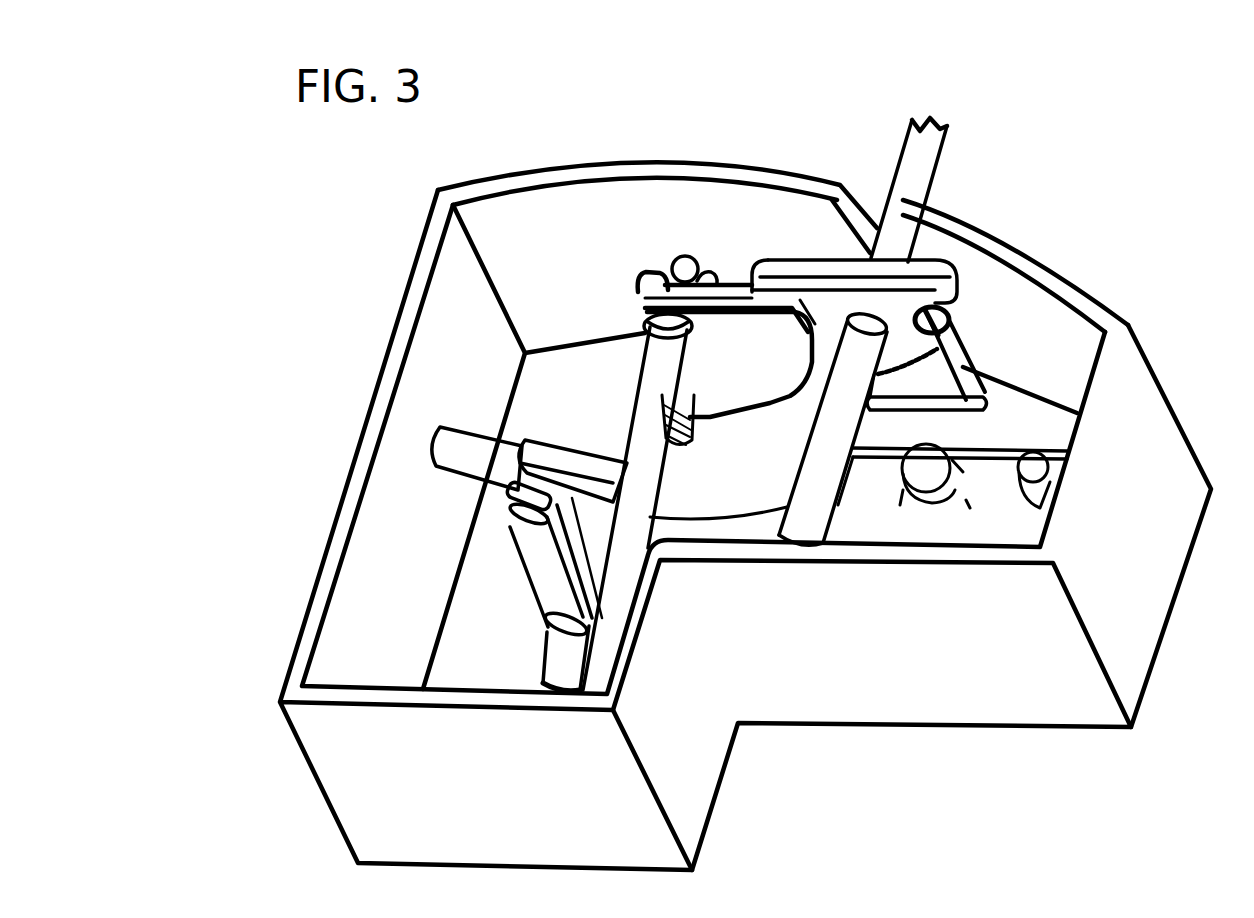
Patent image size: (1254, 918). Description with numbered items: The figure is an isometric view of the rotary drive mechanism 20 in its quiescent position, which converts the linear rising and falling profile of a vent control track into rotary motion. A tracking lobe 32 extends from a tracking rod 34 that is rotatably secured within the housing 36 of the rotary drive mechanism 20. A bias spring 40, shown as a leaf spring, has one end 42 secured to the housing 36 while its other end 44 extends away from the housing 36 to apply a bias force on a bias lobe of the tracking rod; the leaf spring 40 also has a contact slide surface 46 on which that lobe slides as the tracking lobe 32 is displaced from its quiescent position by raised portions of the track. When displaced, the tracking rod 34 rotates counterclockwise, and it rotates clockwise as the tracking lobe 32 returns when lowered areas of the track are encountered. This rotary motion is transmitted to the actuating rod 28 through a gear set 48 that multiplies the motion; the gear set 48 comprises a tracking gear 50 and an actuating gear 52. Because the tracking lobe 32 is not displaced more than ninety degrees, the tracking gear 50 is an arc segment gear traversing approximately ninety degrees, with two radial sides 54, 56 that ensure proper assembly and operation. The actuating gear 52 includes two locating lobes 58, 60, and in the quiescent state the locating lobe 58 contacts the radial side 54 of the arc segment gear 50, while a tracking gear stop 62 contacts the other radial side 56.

The rotary drive mechanism 20 is at (645, 122).
The actuating rod 28 is at (903, 150).
The tracking lobe 32 is at (517, 543).
The tracking rod 34 is at (640, 413).
The housing 36 is at (1152, 613).
The bias spring 40 is at (707, 513).
The one end 42 is at (1015, 528).
The other end 44 is at (433, 428).
The contact slide surface 46 is at (428, 453).
The gear set 48 is at (747, 233).
The tracking gear 50 is at (763, 381).
The actuating gear 52 is at (912, 347).
The radial side 54 is at (732, 290).
The radial side 56 is at (676, 258).
The locating lobe 58 is at (778, 292).
The locating lobe 60 is at (950, 310).
The tracking gear stop 62 is at (696, 447).